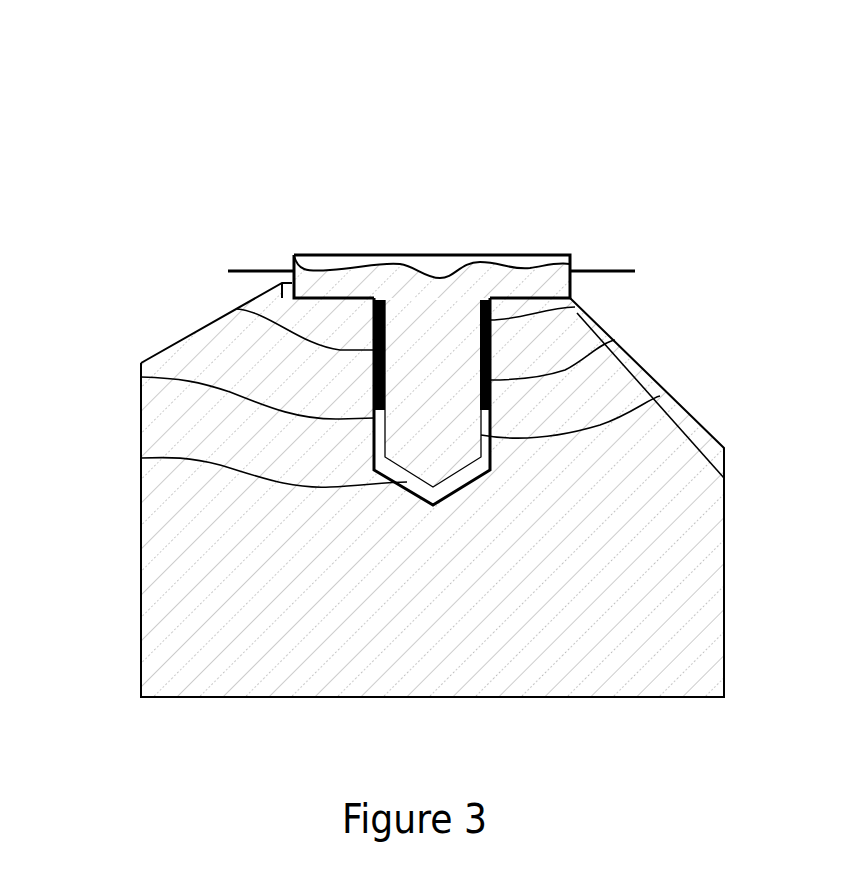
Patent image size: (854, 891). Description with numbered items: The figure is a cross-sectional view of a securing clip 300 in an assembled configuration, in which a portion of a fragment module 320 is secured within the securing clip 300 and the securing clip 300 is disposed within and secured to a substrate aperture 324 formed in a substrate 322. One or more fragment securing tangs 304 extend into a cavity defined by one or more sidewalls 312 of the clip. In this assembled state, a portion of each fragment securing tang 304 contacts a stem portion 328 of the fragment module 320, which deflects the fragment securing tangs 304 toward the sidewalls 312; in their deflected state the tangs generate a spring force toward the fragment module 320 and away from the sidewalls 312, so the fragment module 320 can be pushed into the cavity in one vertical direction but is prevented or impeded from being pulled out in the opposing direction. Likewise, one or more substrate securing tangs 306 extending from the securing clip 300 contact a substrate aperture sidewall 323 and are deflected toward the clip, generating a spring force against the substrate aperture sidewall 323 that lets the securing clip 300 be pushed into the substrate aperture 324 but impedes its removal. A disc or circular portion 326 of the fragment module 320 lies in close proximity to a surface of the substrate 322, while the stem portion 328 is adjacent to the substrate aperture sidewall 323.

The securing clip 300 is at (97, 72).
The fragment securing tang 304 is at (237, 309).
The substrate securing tang 306 is at (615, 340).
The sidewall 312 is at (575, 307).
The fragment module 320 is at (504, 265).
The substrate 322 is at (158, 434).
The substrate aperture sidewall 323 is at (141, 377).
The substrate aperture 324 is at (141, 458).
The disc or circular portion 326 is at (325, 283).
The stem portion 328 is at (660, 396).